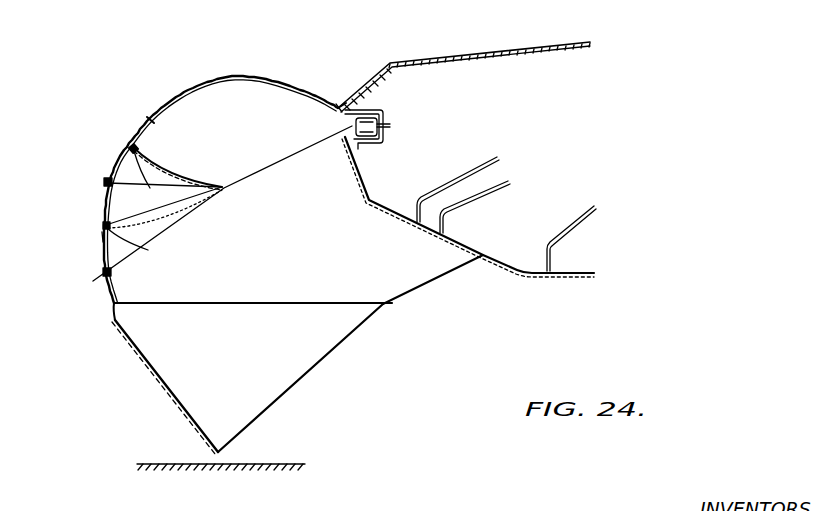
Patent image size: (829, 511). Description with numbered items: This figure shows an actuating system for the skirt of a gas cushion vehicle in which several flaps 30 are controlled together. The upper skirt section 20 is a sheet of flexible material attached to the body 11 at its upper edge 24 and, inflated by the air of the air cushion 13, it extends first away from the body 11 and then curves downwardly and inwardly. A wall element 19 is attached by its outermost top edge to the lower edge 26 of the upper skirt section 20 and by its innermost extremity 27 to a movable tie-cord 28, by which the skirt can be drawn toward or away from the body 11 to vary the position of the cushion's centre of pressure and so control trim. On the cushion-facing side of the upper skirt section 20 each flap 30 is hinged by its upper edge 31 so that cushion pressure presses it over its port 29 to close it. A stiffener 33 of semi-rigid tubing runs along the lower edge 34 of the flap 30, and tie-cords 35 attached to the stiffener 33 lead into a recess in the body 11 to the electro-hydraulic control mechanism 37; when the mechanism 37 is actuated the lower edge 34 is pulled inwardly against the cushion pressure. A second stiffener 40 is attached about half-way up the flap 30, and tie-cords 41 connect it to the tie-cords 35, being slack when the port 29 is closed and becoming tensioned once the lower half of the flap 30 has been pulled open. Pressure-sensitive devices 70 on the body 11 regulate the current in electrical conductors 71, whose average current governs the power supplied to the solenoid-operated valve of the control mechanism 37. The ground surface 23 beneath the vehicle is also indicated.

The body 11 is at (505, 52).
The air cushion 13 is at (452, 361).
The wall element 19 is at (160, 387).
The upper skirt section 20 is at (228, 76).
The ground surface 23 is at (143, 463).
The upper edge 24 is at (338, 106).
The lower edge 26 is at (112, 308).
The innermost extremity 27 is at (391, 302).
The tie-cord 28 is at (430, 282).
The port 29 is at (101, 237).
The flap 30 is at (145, 136).
The upper edge 31 is at (153, 121).
The stiffener 33 is at (112, 186).
The lower edge 34 is at (104, 182).
The tie-cord 35 is at (190, 213).
The electro-hydraulic control mechanism 37 is at (368, 124).
The second stiffener 40 is at (153, 248).
The tie-cord 41 is at (176, 212).
The pressure-sensitive device 70 is at (549, 276).
The electrical conductor 71 is at (581, 217).